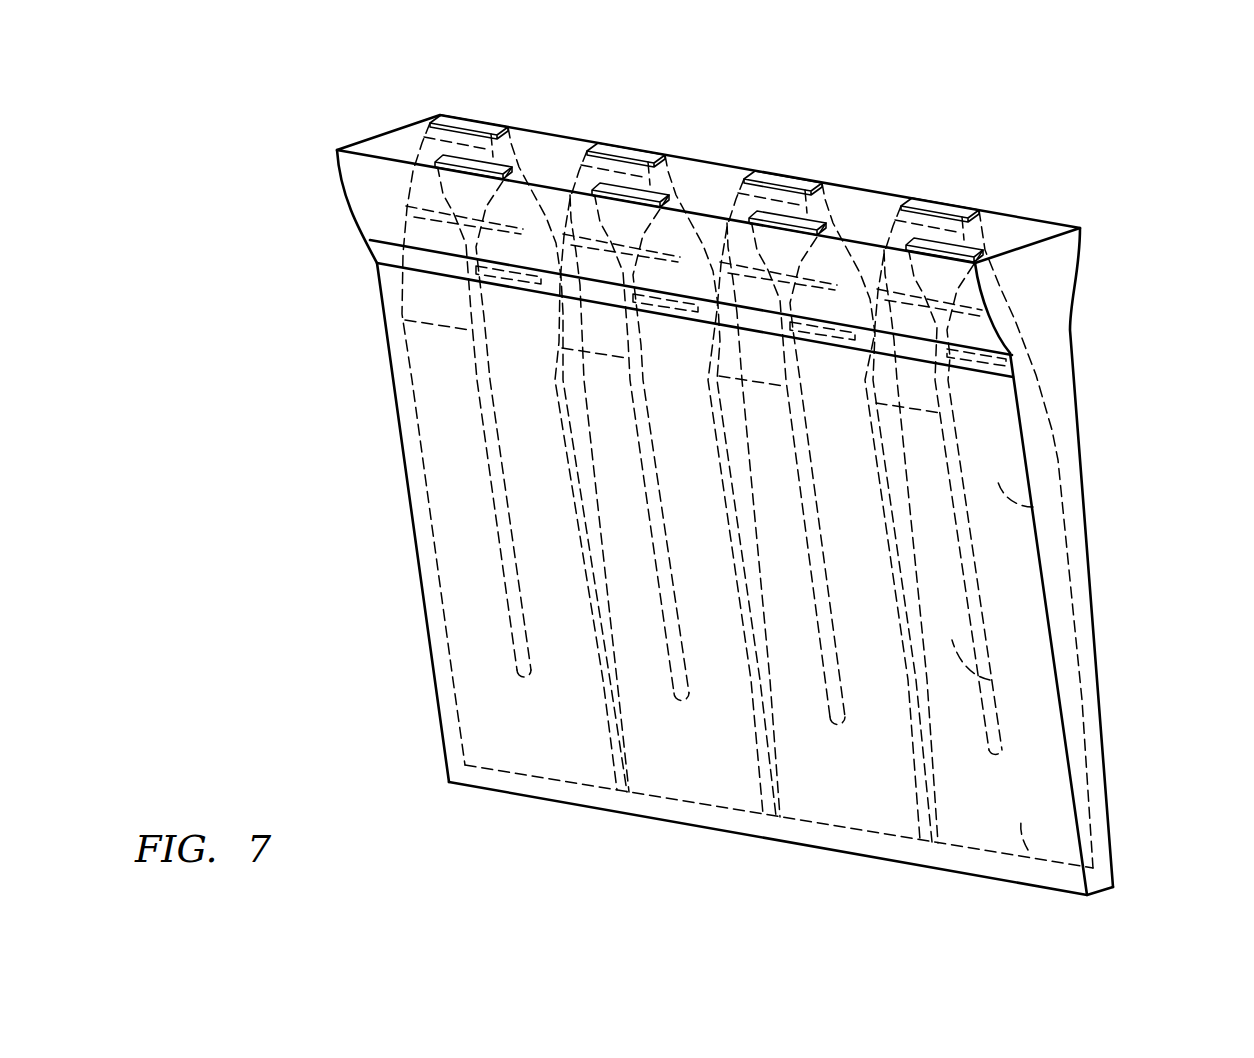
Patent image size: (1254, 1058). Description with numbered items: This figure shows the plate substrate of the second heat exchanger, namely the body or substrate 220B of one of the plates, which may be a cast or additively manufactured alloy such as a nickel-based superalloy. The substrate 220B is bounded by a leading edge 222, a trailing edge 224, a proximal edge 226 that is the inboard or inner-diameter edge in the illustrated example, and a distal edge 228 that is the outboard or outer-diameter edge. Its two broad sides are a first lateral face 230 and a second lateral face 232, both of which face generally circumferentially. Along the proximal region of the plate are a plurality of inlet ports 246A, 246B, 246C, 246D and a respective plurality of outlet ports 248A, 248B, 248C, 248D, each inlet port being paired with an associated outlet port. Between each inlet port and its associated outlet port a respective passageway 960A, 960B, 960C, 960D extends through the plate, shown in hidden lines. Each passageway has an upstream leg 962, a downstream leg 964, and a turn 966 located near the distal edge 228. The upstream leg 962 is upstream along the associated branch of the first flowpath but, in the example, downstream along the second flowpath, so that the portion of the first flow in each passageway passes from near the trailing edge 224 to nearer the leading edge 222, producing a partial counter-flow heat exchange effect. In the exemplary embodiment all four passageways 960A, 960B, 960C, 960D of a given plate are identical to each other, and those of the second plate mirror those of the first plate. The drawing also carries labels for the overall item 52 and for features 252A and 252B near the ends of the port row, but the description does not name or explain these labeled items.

The body or substrate 220B is at (745, 489).
The heat exchanger plate 52 is at (1067, 270).
The proximal edge 226 is at (1025, 230).
The leading edge 222 is at (1078, 538).
The trailing edge 224 is at (407, 494).
The distal edge 228 is at (684, 826).
The first lateral face 230 is at (1085, 437).
The second lateral face 232 is at (458, 627).
The inlet port 246A is at (971, 186).
The inlet port 246B is at (811, 158).
The inlet port 246C is at (655, 130).
The inlet port 246D is at (493, 106).
The outlet port 248A is at (924, 226).
The outlet port 248B is at (766, 199).
The outlet port 248C is at (608, 175).
The outlet port 248D is at (450, 140).
The end portion 252A is at (388, 140).
The end portion 252B is at (924, 168).
The passageway 960A is at (1030, 640).
The passageway 960B is at (880, 745).
The passageway 960C is at (643, 705).
The passageway 960D is at (493, 690).
The upstream leg 962 is at (990, 680).
The downstream leg 964 is at (1033, 507).
The turn 966 is at (1028, 850).